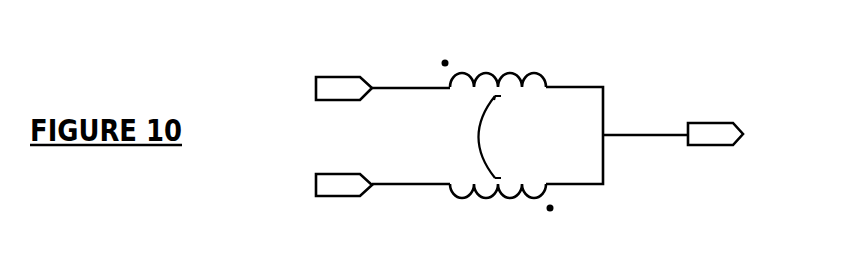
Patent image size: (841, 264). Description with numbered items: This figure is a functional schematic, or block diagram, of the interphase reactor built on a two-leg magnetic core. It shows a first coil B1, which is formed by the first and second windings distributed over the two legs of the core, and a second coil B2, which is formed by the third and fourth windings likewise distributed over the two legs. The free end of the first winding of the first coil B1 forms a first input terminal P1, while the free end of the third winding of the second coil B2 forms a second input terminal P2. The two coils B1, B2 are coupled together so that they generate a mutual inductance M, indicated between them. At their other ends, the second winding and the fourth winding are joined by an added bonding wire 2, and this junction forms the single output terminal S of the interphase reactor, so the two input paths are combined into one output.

The bonding wire 2 is at (643, 135).
The first input terminal P1 is at (368, 88).
The second input terminal P2 is at (368, 185).
The first coil B1 is at (494, 53).
The second coil B2 is at (502, 218).
The mutual inductance M is at (480, 137).
The output terminal S is at (730, 134).